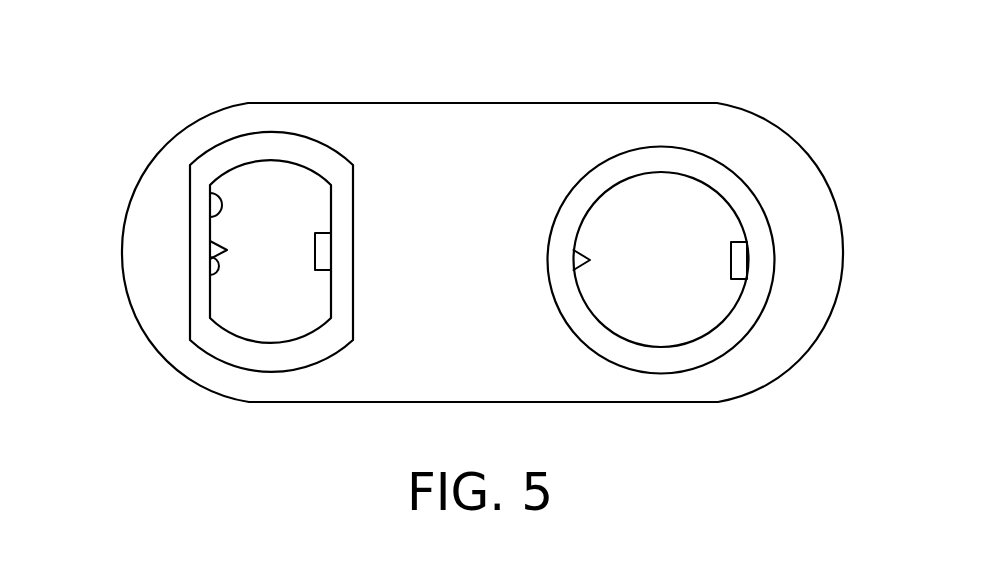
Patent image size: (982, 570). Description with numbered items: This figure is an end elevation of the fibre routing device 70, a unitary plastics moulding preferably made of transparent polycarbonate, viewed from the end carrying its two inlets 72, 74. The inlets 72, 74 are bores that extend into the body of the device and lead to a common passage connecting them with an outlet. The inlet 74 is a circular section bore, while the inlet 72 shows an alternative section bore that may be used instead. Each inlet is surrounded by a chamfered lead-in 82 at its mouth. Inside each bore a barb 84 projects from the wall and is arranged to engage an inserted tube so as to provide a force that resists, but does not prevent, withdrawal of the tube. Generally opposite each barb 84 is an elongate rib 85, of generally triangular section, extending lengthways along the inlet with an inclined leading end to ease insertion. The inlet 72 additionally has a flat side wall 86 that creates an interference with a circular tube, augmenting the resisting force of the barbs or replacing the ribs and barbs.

The fibre routing device 70 is at (443, 89).
The inlet 72 is at (217, 295).
The inlet 74 is at (662, 323).
The chamfered lead-in 82 is at (280, 147).
The barb 84 is at (315, 247).
The elongate rib 85 is at (210, 280).
The flat side wall 86 is at (210, 215).